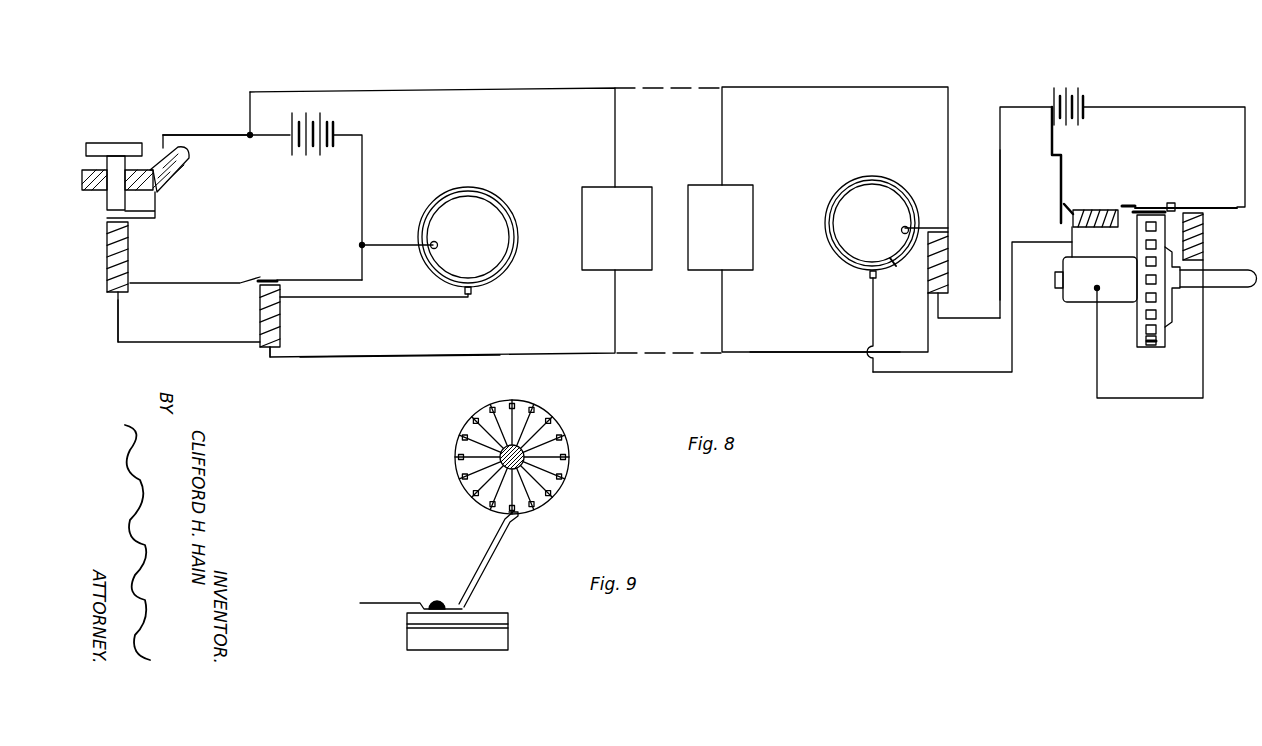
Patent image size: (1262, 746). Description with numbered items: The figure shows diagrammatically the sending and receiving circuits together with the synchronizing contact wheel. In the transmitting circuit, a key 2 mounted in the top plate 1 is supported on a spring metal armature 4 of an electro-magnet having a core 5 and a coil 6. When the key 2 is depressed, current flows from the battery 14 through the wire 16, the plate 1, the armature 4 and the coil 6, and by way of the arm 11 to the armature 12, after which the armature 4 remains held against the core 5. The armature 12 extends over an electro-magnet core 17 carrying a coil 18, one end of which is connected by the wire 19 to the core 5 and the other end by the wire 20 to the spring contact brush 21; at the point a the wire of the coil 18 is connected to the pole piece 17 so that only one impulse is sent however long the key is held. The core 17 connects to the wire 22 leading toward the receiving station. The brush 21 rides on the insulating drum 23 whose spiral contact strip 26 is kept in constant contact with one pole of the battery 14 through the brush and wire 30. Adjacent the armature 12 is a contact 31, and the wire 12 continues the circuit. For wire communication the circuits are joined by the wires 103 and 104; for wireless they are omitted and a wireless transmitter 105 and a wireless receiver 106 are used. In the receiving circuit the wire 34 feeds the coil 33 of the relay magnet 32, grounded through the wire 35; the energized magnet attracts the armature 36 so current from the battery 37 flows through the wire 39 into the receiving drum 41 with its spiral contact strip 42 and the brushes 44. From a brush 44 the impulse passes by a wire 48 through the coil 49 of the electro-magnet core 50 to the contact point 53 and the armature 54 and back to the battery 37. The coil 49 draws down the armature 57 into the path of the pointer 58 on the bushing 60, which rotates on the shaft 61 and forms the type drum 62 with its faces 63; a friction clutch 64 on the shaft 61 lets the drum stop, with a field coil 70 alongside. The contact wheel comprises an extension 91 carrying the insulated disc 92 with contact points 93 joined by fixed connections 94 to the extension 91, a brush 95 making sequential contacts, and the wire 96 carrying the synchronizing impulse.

In FIG. 8, the top plate 1 is at (94, 190).
In FIG. 8, the key 2 is at (118, 143).
In FIG. 8, the spring metal armature 4 is at (150, 215).
In FIG. 8, the core 5 is at (107, 243).
In FIG. 8, the coil 6 is at (108, 262).
In FIG. 8, the arm 11 is at (258, 275).
In FIG. 8, the armature 12 is at (300, 279).
In FIG. 8, the battery 14 is at (303, 160).
In FIG. 8, the wire 16 is at (213, 137).
In FIG. 8, the electro-magnet core 17 is at (281, 315).
In FIG. 8, the coil 18 is at (281, 334).
In FIG. 8, the wire 19 is at (120, 326).
In FIG. 8, the wire 20 is at (400, 305).
In FIG. 8, the spring contact brush 21 is at (471, 297).
In FIG. 8, the wire 22 is at (343, 356).
In FIG. 8, the drum 23 is at (515, 222).
In FIG. 8, the spiral contact strip 26 is at (436, 271).
In FIG. 8, the brush and wire 30 is at (400, 243).
In FIG. 8, the contact 31 is at (278, 278).
In FIG. 8, the electric-relay magnet 32 is at (948, 258).
In FIG. 8, the coil 33 is at (948, 275).
In FIG. 8, the wire 34 is at (781, 88).
In FIG. 8, the wire 35 is at (823, 351).
In FIG. 8, the armature 36 is at (933, 222).
In FIG. 8, the battery 37 is at (1068, 88).
In FIG. 8, the wire 39 is at (1002, 228).
In FIG. 8, the receiving drum 41 is at (840, 190).
In FIG. 8, the spiral contact strip 42 is at (893, 265).
In FIG. 8, the brush 44 is at (870, 279).
In FIG. 8, the wire 48 is at (877, 326).
In FIG. 8, the coil 49 is at (1087, 228).
In FIG. 8, the electro-magnet core 50 is at (1095, 208).
In FIG. 8, the contact point 53 is at (1128, 205).
In FIG. 8, the armature 54 is at (1161, 206).
In FIG. 8, the armature 57 is at (1059, 179).
In FIG. 8, the pointer 58 is at (1070, 207).
In FIG. 8, the bushing 60 is at (1086, 301).
In FIG. 8, the shaft 61 is at (1228, 276).
In FIG. 8, the type drum 62 is at (1146, 346).
In FIG. 8, the faces 63 is at (1162, 326).
In FIG. 8, the friction clutch 64 is at (1174, 294).
In FIG. 8, the field coil 70 is at (1205, 244).
In FIG. 8, the wire 103 is at (688, 86).
In FIG. 8, the wire 104 is at (686, 352).
In FIG. 8, the wireless transmitter 105 is at (641, 194).
In FIG. 8, the wireless receiver 106 is at (684, 278).
In FIG. 8, the connection point a is at (258, 296).
In FIG. 9, the extension 91 is at (492, 468).
In FIG. 9, the circular insulated disc 92 is at (550, 426).
In FIG. 9, the contact points 93 is at (533, 403).
In FIG. 9, the fixed connections 94 is at (558, 456).
In FIG. 9, the brush 95 is at (490, 568).
In FIG. 9, the wire 96 is at (385, 601).